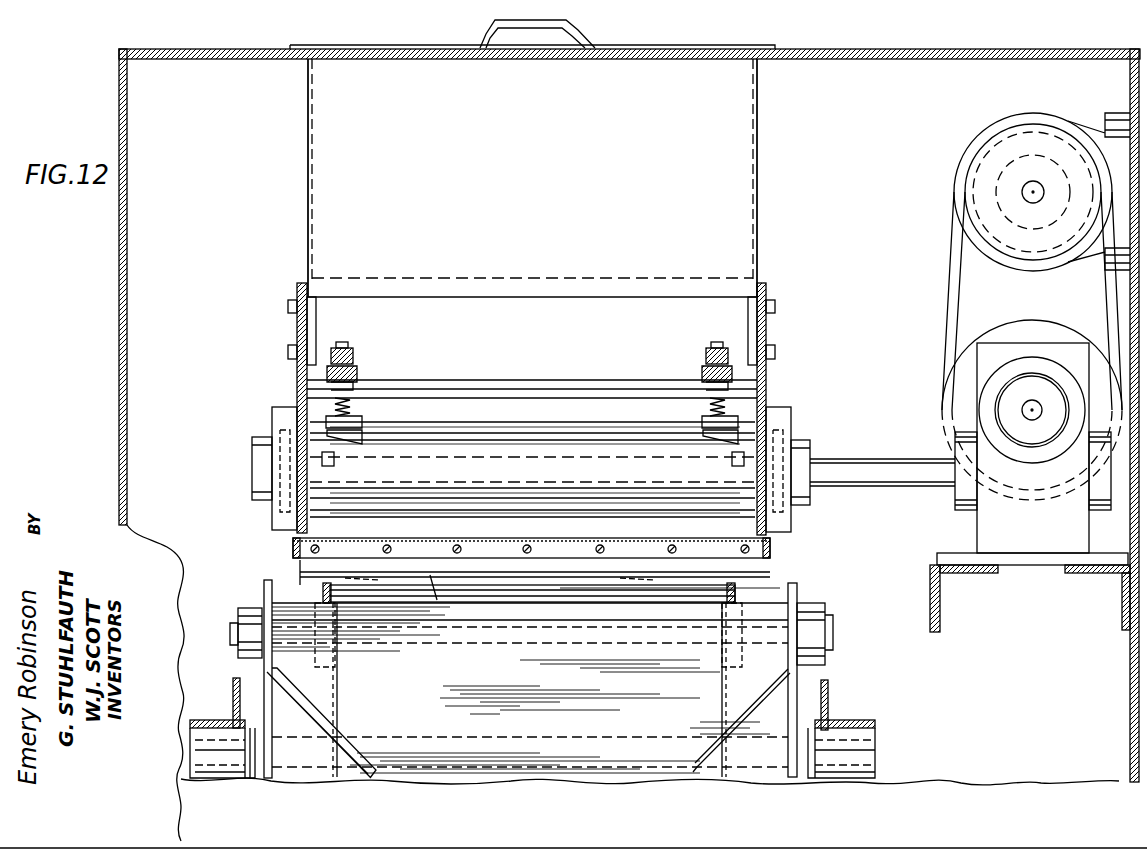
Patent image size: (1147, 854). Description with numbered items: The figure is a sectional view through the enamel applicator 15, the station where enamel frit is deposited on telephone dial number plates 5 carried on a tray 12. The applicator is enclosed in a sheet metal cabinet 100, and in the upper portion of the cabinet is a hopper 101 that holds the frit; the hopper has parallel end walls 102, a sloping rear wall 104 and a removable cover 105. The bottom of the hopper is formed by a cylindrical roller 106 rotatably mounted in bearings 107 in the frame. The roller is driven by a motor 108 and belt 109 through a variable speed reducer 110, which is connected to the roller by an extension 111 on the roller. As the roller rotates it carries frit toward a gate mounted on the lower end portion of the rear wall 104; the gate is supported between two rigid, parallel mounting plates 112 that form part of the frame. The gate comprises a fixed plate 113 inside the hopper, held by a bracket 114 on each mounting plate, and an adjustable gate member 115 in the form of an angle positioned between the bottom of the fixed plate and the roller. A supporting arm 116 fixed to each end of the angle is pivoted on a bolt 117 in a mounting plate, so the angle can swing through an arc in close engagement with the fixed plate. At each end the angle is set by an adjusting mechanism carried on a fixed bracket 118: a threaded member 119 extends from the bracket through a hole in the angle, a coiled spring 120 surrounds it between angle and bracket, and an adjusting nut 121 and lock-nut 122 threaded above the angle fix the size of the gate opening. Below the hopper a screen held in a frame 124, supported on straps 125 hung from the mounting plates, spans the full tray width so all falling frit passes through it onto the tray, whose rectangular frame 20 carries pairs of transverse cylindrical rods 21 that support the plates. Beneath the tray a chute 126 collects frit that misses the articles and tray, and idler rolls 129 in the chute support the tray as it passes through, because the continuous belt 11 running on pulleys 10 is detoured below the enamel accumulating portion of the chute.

The telephone dial number plate 5 is at (345, 580).
The pulley 10 is at (262, 668).
The continuous belt 11 is at (265, 700).
The tray 12 is at (316, 594).
The enamel applicator 15 is at (112, 269).
The tray frame 20 is at (325, 572).
The transverse cylindrical rod 21 is at (430, 576).
The sheet metal cabinet 100 is at (1130, 300).
The hopper 101 is at (764, 120).
The hopper end wall 102 is at (308, 190).
The sloping rear wall 104 is at (733, 246).
The removable cover 105 is at (428, 49).
The cylindrical roller 106 is at (450, 442).
The bearing 107 is at (280, 408).
The motor 108 is at (985, 170).
The belt 109 is at (950, 278).
The variable speed reducer 110 is at (998, 340).
The roller extension 111 is at (848, 462).
The mounting plate 112 is at (297, 337).
The fixed plate 113 is at (482, 298).
The bracket 114 is at (310, 322).
The adjustable gate member 115 is at (524, 388).
The supporting arm 116 is at (340, 436).
The bolt 117 is at (334, 462).
The fixed bracket 118 is at (362, 422).
The threaded member 119 is at (342, 342).
The coiled spring 120 is at (352, 404).
The adjusting nut 121 is at (357, 374).
The lock-nut 122 is at (354, 356).
The screen frame 124 is at (488, 548).
The strap 125 is at (292, 540).
The chute 126 is at (796, 690).
The idler roll 129 is at (335, 665).